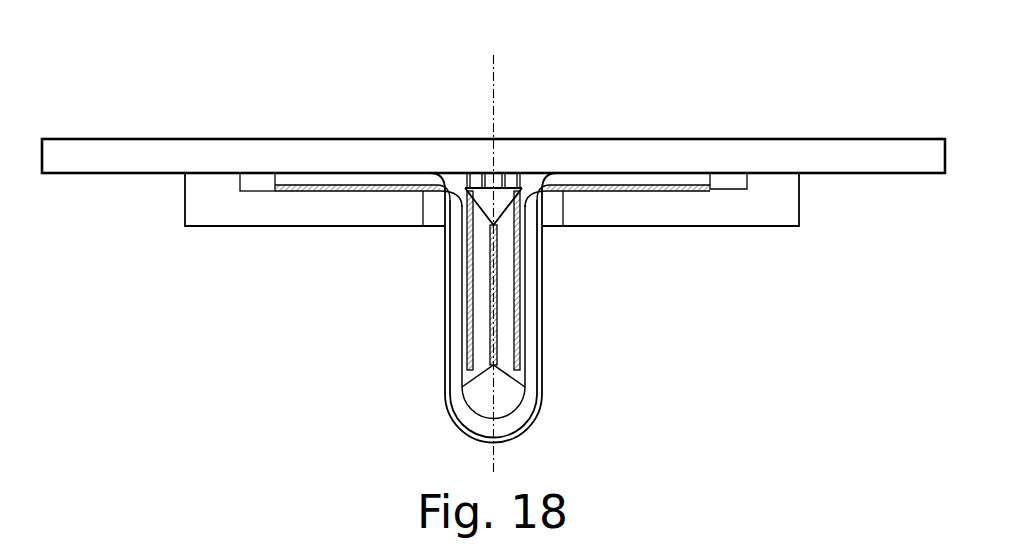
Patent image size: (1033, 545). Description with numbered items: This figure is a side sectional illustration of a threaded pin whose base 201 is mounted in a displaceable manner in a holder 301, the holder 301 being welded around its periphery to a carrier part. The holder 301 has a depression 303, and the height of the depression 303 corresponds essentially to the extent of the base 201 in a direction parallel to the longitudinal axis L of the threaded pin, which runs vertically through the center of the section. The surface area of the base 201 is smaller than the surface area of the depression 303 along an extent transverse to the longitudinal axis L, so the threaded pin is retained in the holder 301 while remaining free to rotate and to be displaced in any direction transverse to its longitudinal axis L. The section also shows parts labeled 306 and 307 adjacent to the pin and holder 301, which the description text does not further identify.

The longitudinal axis L is at (488, 80).
The base 201 is at (635, 189).
The holder 301 is at (777, 215).
The depression 303 is at (729, 184).
The tubular receptacle 306 is at (426, 236).
The housing block 307 is at (200, 235).